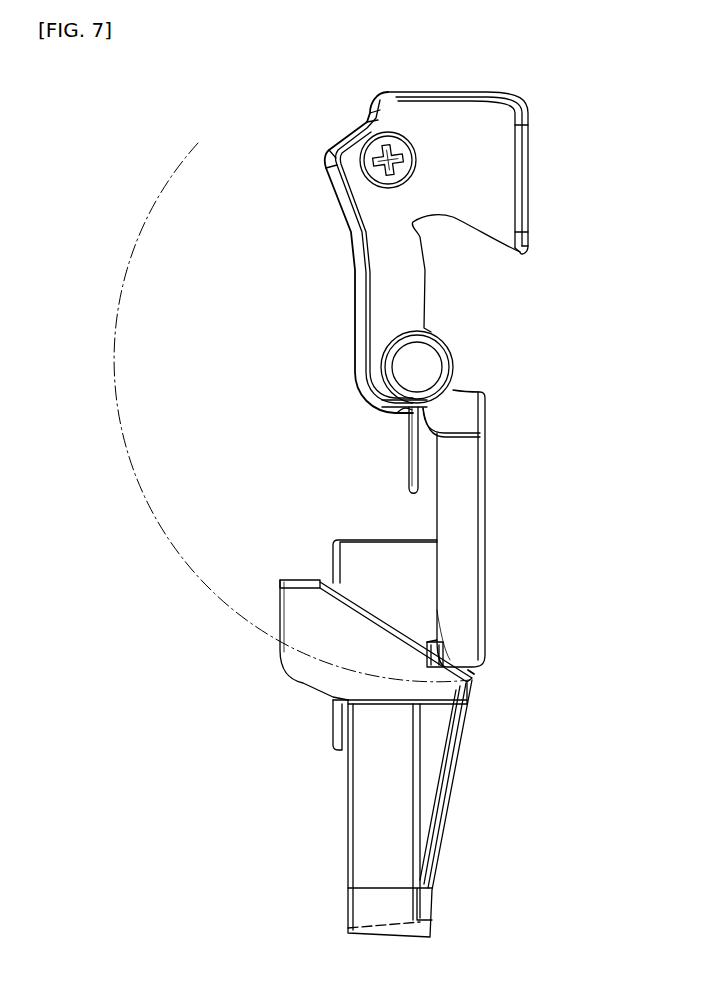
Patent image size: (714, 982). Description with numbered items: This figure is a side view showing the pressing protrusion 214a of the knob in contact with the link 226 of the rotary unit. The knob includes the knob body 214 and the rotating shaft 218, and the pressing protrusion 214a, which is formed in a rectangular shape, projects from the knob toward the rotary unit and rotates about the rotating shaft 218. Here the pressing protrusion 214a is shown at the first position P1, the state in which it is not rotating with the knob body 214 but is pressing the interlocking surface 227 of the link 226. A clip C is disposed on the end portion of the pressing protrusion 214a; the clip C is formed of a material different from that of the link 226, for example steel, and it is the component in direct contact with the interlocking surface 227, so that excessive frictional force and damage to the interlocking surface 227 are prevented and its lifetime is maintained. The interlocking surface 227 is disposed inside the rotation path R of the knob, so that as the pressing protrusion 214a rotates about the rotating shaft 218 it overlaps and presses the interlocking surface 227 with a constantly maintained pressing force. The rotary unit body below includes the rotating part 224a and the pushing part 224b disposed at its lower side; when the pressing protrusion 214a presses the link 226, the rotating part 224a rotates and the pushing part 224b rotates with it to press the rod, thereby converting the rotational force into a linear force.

The knob body 214 is at (492, 173).
The pressing protrusion 214a is at (465, 478).
The rotating shaft 218 is at (403, 367).
The rotating part 224a is at (365, 560).
The pushing part 224b is at (370, 813).
The link 226 is at (308, 673).
The interlocking surface 227 is at (373, 613).
The first position P1 is at (482, 647).
The clip C is at (472, 672).
The rotation path R is at (148, 527).